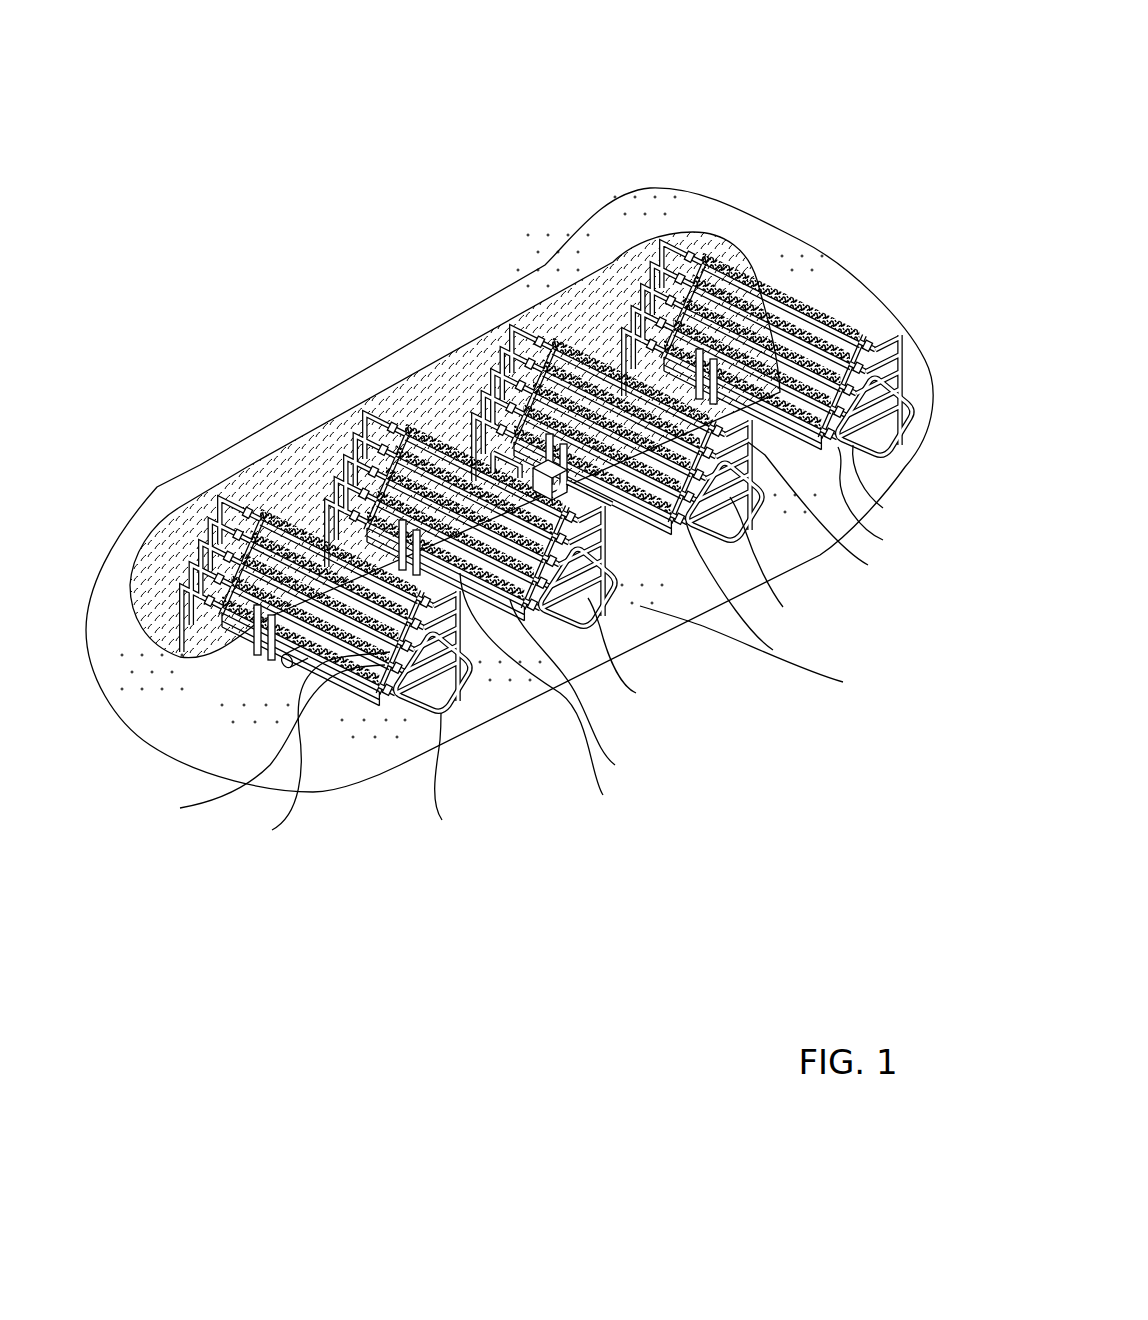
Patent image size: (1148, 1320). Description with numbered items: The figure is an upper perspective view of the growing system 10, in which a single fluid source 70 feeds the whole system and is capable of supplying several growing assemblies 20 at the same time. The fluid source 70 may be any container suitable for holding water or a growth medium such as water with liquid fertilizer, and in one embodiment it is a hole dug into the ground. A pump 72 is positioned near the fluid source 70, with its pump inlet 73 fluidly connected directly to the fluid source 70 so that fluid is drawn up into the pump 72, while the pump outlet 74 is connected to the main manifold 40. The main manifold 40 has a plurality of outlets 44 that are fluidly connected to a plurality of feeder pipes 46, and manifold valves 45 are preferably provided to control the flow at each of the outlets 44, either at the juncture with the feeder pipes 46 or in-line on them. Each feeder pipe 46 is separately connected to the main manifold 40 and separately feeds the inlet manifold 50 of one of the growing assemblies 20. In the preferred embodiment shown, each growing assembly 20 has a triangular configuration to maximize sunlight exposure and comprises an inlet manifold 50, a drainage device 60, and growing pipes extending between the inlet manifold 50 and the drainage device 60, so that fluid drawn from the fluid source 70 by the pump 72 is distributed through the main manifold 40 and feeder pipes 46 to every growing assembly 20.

The growing system 10 is at (505, 422).
The growing assemblies 20 is at (580, 352).
The main manifold 40 is at (275, 670).
The outlets 44 is at (520, 633).
The manifold valves 45 is at (574, 646).
The feeder pipes 46 is at (679, 641).
The inlet manifold 50 is at (892, 364).
The drainage device 60 is at (647, 257).
The fluid source 70 is at (433, 380).
The pump 72 is at (550, 473).
The pump inlet 73 is at (516, 418).
The pump outlet 74 is at (593, 490).